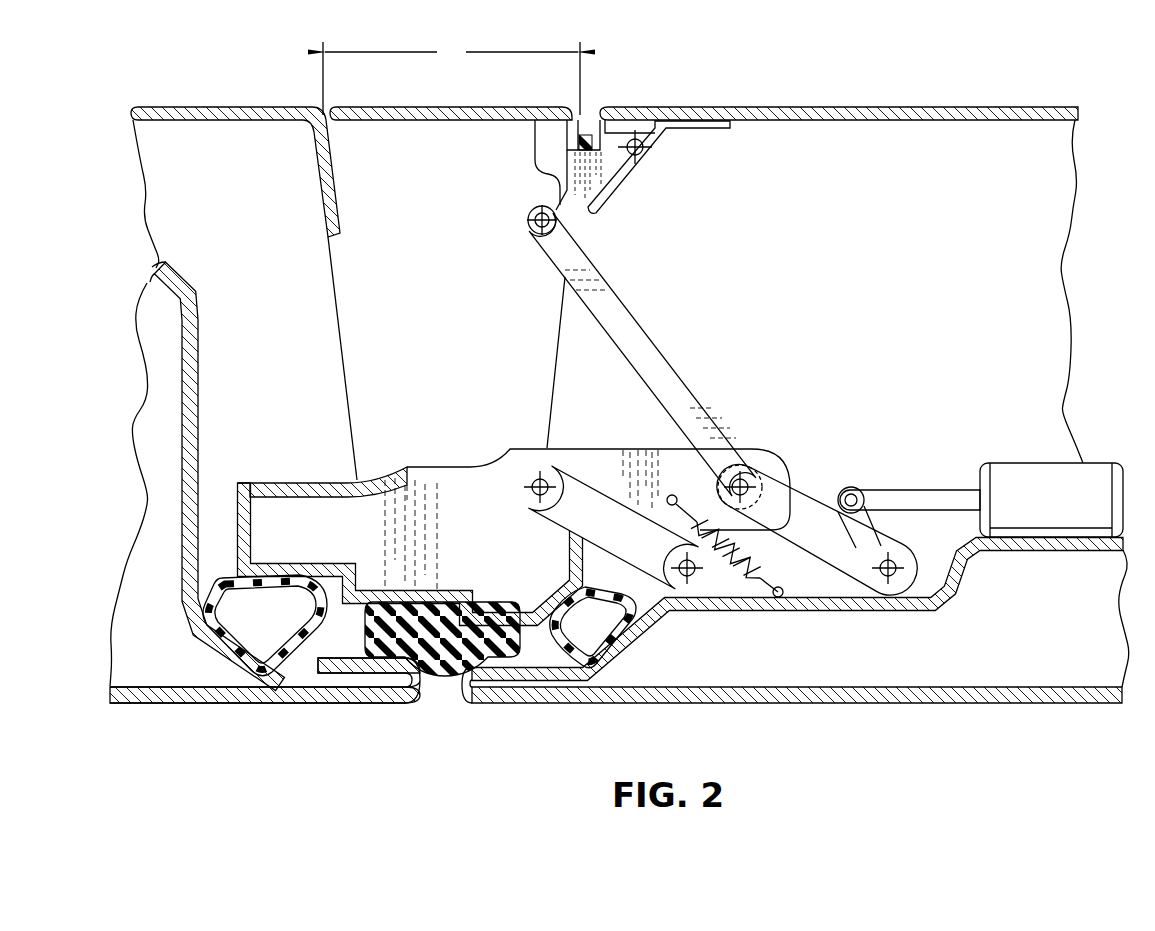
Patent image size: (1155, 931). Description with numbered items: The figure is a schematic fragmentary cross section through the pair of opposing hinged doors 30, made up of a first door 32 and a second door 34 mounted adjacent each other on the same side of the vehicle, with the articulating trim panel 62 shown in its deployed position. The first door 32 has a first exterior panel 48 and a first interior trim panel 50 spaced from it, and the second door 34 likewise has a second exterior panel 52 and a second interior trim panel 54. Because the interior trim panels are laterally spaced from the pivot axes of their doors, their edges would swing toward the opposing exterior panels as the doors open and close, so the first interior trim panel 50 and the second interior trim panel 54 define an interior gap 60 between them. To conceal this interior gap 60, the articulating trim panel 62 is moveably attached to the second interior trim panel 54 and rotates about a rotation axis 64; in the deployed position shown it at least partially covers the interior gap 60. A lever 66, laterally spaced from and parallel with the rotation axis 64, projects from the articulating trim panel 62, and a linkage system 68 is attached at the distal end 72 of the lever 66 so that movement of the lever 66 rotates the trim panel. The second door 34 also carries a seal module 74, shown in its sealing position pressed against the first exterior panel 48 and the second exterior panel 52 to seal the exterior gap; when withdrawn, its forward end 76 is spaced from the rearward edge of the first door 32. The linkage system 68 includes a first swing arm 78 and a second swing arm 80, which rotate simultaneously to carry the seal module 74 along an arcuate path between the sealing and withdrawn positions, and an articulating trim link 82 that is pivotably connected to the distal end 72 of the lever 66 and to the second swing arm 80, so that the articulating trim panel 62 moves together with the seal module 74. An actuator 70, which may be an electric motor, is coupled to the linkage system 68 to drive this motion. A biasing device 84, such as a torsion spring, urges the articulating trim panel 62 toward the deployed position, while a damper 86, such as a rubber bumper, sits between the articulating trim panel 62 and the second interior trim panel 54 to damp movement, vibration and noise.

The pair of opposing hinged doors 30 is at (451, 742).
The first door 32 is at (148, 706).
The second door 34 is at (1004, 706).
The first exterior panel 48 is at (286, 704).
The first interior trim panel 50 is at (216, 106).
The second exterior panel 52 is at (846, 704).
The second interior trim panel 54 is at (770, 106).
The interior gap 60 is at (451, 77).
The articulating trim panel 62 is at (463, 106).
The rotation axis 64 is at (652, 135).
The lever 66 is at (541, 190).
The linkage system 68 is at (709, 393).
The actuator 70 is at (1022, 462).
The distal end 72 is at (529, 229).
The seal module 74 is at (441, 466).
The forward end 76 is at (237, 519).
The first swing arm 78 is at (561, 465).
The second swing arm 80 is at (784, 484).
The articulating trim link 82 is at (645, 318).
The biasing device 84 is at (671, 134).
The damper 86 is at (594, 132).